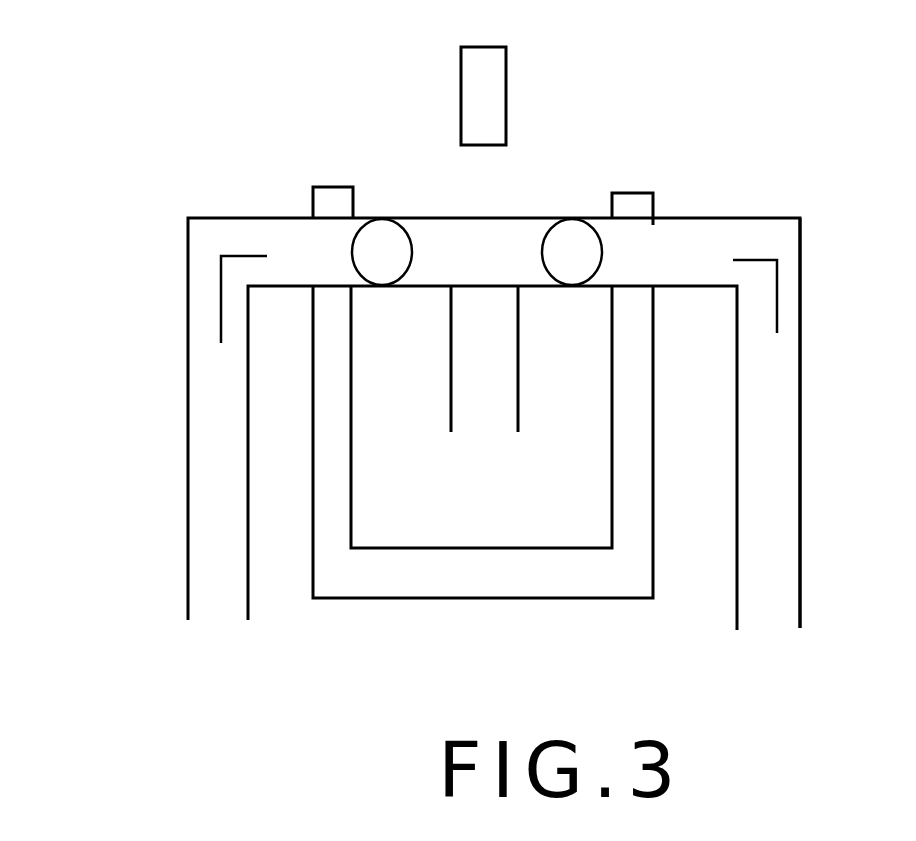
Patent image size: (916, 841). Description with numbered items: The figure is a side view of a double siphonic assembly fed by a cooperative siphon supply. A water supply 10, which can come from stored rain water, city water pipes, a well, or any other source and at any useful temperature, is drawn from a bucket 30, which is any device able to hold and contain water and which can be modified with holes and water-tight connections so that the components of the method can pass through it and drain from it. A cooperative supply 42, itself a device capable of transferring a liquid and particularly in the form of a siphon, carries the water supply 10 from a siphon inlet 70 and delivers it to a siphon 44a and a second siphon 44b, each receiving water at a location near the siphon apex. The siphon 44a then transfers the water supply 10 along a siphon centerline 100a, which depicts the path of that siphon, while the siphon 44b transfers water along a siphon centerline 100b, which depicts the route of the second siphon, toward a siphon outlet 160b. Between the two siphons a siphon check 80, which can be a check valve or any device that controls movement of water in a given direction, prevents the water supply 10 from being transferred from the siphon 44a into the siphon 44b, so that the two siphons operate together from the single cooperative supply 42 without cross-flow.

The water supply 10 is at (461, 95).
The bucket 30 is at (335, 194).
The cooperative supply 42 is at (481, 417).
The siphon 44a is at (208, 530).
The second siphon 44b is at (772, 525).
The siphon inlet 70 is at (489, 432).
The siphon check 80 is at (477, 252).
The siphon centerline 100a is at (288, 289).
The siphon centerline 100b is at (722, 285).
The siphon outlet 160b is at (804, 671).